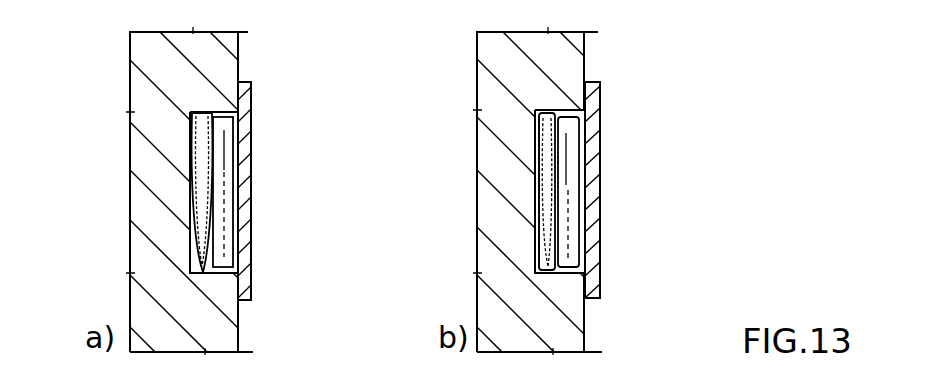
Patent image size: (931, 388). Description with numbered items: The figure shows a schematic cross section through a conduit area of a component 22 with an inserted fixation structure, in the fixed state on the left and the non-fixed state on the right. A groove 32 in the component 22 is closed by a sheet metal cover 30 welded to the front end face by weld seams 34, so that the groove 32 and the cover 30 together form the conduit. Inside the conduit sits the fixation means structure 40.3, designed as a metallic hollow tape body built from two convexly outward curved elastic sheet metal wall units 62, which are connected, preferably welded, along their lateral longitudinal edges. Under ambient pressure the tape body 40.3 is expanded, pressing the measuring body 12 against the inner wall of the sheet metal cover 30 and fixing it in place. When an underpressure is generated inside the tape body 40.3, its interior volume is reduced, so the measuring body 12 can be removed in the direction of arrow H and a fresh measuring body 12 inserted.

In FIG. 13a, the wall 22 is at (150, 67).
In FIG. 13b, the wall 22 is at (488, 67).
In FIG. 13a, the weld seams 34 is at (239, 83).
In FIG. 13b, the weld seams 34 is at (586, 83).
In FIG. 13a, the sheet metal cover 30 is at (240, 200).
In FIG. 13b, the sheet metal cover 30 is at (596, 222).
In FIG. 13a, the groove 32 is at (192, 113).
In FIG. 13b, the groove 32 is at (539, 115).
In FIG. 13a, the fixation means structure 40.3 is at (191, 183).
In FIG. 13b, the fixation means structure 40.3 is at (540, 197).
In FIG. 13a, the sheet metal wall units 62 is at (212, 197).
In FIG. 13b, the sheet metal wall units 62 is at (558, 215).
In FIG. 13a, the measuring body 12 is at (224, 239).
In FIG. 13b, the measuring body 12 is at (570, 256).
In FIG. 13b, the arrow H is at (582, 143).